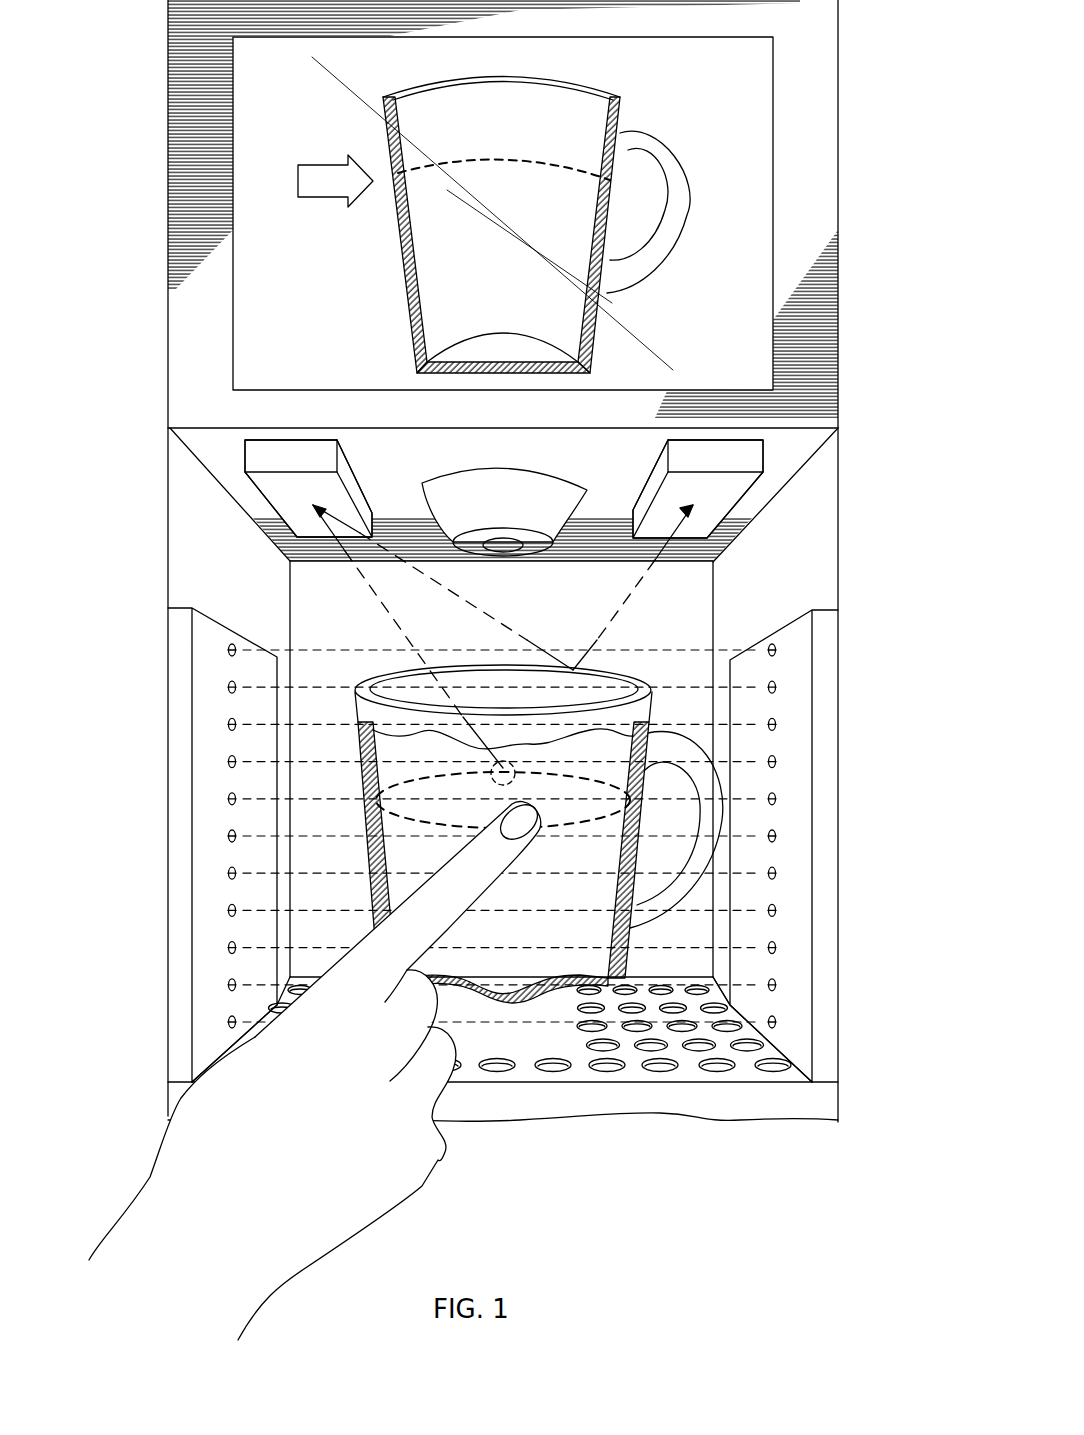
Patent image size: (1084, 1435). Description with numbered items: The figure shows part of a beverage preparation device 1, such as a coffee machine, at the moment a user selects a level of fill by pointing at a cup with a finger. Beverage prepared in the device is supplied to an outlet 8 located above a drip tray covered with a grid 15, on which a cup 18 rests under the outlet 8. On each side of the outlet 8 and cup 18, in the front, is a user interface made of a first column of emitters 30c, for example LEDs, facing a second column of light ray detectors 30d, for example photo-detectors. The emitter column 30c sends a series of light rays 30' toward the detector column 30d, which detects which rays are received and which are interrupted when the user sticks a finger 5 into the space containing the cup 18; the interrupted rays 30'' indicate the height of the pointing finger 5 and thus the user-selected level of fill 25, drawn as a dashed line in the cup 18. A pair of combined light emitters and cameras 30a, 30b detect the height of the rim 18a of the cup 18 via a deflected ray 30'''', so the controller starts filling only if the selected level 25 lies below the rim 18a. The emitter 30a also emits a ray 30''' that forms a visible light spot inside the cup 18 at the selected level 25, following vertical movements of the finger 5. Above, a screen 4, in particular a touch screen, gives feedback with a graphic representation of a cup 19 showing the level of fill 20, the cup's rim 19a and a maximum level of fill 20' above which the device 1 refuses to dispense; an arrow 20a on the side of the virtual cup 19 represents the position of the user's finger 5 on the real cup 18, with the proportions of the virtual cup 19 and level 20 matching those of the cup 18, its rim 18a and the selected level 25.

The beverage preparation device 1 is at (888, 115).
The screen 4 is at (278, 348).
The finger 5 is at (455, 873).
The outlet 8 is at (490, 507).
The grid 15 is at (551, 1074).
The cup 18 is at (640, 812).
The rim of cup 18a is at (355, 687).
The cup representation 19 is at (480, 272).
The cup's rim representation 19a is at (613, 92).
The level of fill representation 20 is at (555, 145).
The maximum level of fill 20' is at (480, 73).
The graphical representation of an arrow 20a is at (323, 163).
The level of fill 25 is at (507, 762).
The combined light emitter and camera 30a is at (285, 489).
The combined light emitter and camera 30b is at (733, 460).
The column of emitters 30c is at (178, 692).
The column of light ray detectors 30d is at (827, 650).
The light rays 30' is at (836, 836).
The interrupted rays 30'' is at (590, 1029).
The ray 30''' is at (388, 636).
The deflected ray 30'''' is at (697, 587).